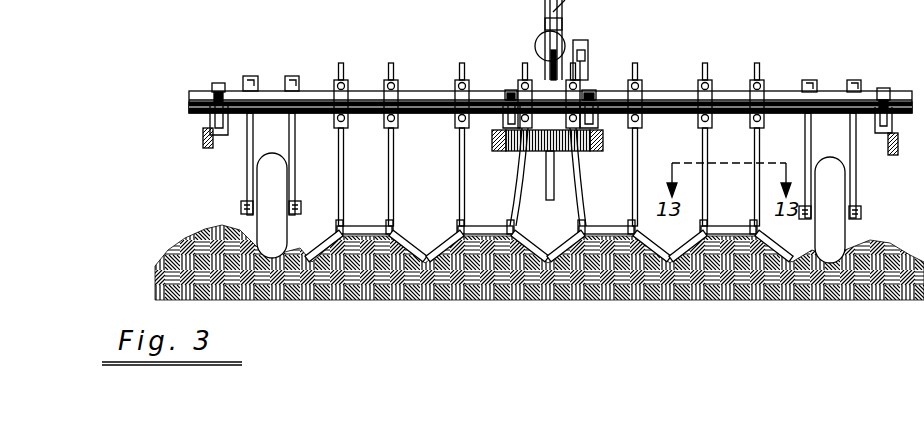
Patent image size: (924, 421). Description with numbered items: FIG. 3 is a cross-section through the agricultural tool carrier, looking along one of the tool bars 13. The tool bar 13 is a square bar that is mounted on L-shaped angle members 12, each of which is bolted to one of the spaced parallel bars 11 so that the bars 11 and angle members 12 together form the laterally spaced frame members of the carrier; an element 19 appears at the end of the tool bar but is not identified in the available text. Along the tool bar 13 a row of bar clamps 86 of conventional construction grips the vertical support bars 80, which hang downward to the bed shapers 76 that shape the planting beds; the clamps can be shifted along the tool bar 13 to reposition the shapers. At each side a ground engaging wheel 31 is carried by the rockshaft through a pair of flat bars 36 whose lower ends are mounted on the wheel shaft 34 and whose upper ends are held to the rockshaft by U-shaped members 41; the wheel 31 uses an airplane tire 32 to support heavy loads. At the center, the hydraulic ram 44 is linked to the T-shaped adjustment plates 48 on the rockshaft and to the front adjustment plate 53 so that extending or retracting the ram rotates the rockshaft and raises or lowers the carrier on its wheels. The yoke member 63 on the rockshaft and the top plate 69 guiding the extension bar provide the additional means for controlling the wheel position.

The bars 11 is at (203, 138).
The L-shaped angle member 12 is at (228, 137).
The tool bars 13 is at (313, 92).
The end bracket 19 is at (210, 120).
The ground engaging wheels 31 is at (864, 193).
The airplane tires 32 is at (281, 190).
The shaft 34 is at (242, 204).
The flat bars 36 is at (290, 146).
The U-shaped members 41 is at (290, 78).
The hydraulic ram 44 is at (536, 44).
The T-shaped adjustment plates 48 is at (560, 50).
The front adjustment plate 53 is at (546, 172).
The yoke member 63 is at (588, 56).
The top plate 69 is at (590, 41).
The bed shapers 76 is at (401, 237).
The vertical support bars 80 is at (388, 170).
The bar clamps 86 is at (400, 88).